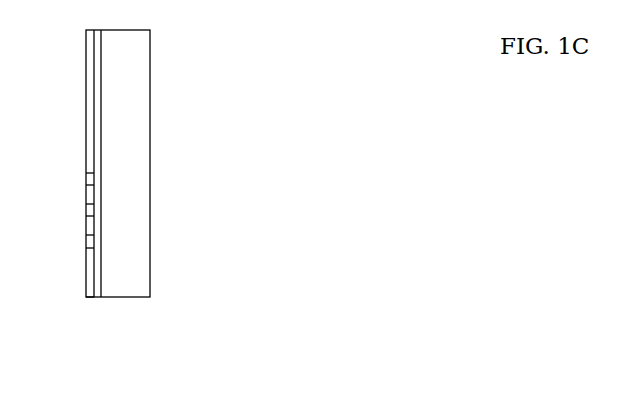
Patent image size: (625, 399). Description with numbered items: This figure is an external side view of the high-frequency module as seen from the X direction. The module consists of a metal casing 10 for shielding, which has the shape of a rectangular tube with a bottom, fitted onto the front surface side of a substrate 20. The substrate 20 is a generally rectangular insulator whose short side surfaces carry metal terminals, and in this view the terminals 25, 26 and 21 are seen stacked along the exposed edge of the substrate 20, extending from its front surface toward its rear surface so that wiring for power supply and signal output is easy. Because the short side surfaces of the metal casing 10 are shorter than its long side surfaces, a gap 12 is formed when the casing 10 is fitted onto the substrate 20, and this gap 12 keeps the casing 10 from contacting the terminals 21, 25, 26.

The metal casing 10 is at (150, 58).
The gap 12 is at (97, 297).
The substrate 20 is at (86, 262).
The metal terminal 21 is at (86, 243).
The metal terminal 25 is at (86, 173).
The metal terminal 26 is at (86, 204).